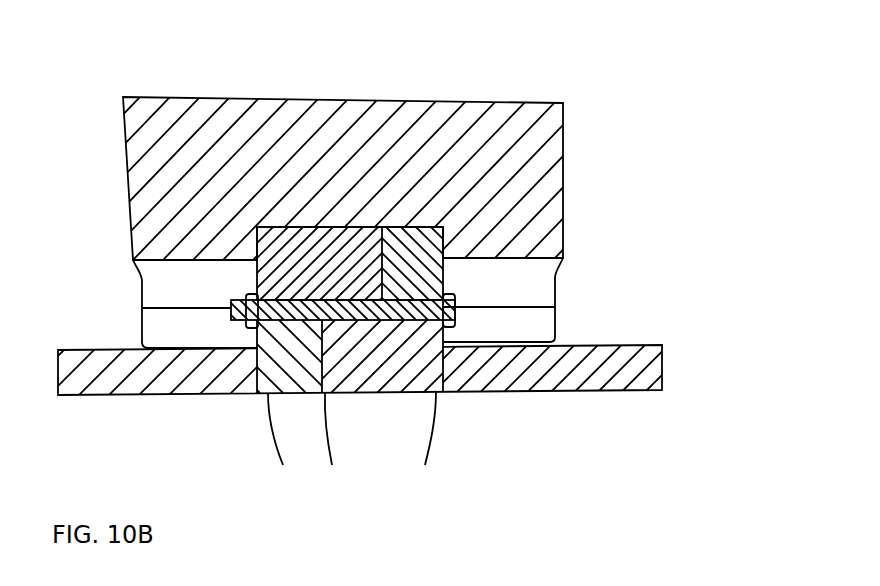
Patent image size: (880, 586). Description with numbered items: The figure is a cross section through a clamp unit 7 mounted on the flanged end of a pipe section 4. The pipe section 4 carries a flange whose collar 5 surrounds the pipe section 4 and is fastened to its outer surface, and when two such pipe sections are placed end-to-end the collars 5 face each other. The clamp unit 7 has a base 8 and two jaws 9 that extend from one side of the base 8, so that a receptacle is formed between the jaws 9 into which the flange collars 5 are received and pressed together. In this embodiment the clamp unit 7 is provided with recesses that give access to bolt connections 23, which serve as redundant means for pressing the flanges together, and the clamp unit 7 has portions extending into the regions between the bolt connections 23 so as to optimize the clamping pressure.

The pipe section 4 is at (642, 342).
The collar 5 is at (427, 248).
The clamp unit 7 is at (602, 112).
The base 8 is at (377, 100).
The jaws 9 is at (563, 237).
The bolt connections 23 is at (455, 298).